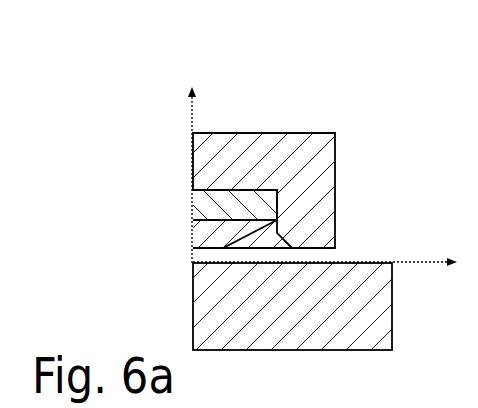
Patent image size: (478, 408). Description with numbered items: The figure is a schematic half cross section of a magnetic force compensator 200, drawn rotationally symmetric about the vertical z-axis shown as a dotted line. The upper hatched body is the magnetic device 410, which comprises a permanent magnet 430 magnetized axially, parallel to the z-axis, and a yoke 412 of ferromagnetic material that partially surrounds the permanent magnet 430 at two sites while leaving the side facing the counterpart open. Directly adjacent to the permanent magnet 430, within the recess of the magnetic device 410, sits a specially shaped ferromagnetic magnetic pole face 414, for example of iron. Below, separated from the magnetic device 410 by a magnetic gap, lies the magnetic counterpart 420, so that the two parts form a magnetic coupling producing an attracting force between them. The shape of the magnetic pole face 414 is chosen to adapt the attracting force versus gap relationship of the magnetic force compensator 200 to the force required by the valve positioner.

The magnetic force compensator 200 is at (158, 90).
The magnetic device 410 is at (176, 156).
The yoke 412 is at (283, 148).
The magnetic pole face 414 is at (207, 235).
The magnetic counterpart 420 is at (192, 305).
The permanent magnet 430 is at (211, 201).